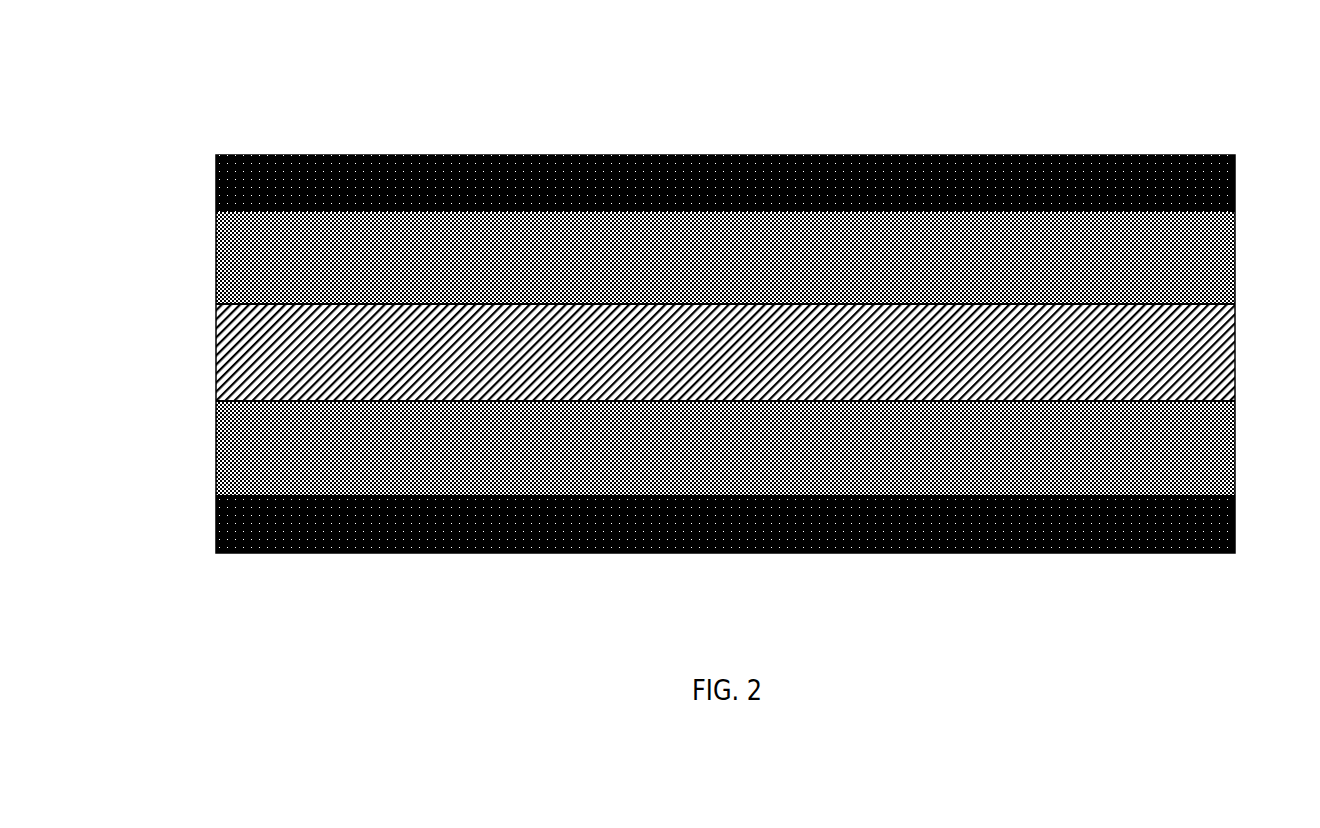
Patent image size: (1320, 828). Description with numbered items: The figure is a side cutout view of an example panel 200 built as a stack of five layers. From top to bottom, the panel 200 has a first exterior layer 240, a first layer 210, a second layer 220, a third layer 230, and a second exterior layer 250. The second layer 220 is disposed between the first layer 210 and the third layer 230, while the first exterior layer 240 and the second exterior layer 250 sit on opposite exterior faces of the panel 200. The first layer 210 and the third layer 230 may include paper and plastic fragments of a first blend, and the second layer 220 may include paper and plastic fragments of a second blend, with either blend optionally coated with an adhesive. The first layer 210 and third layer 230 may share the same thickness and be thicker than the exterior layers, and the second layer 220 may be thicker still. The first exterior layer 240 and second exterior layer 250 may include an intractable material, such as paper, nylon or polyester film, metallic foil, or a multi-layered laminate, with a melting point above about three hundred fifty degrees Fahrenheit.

The panel 200 is at (192, 72).
The first exterior layer 240 is at (1239, 175).
The first layer 210 is at (1239, 263).
The second layer 220 is at (1241, 357).
The third layer 230 is at (1239, 445).
The second exterior layer 250 is at (1237, 533).